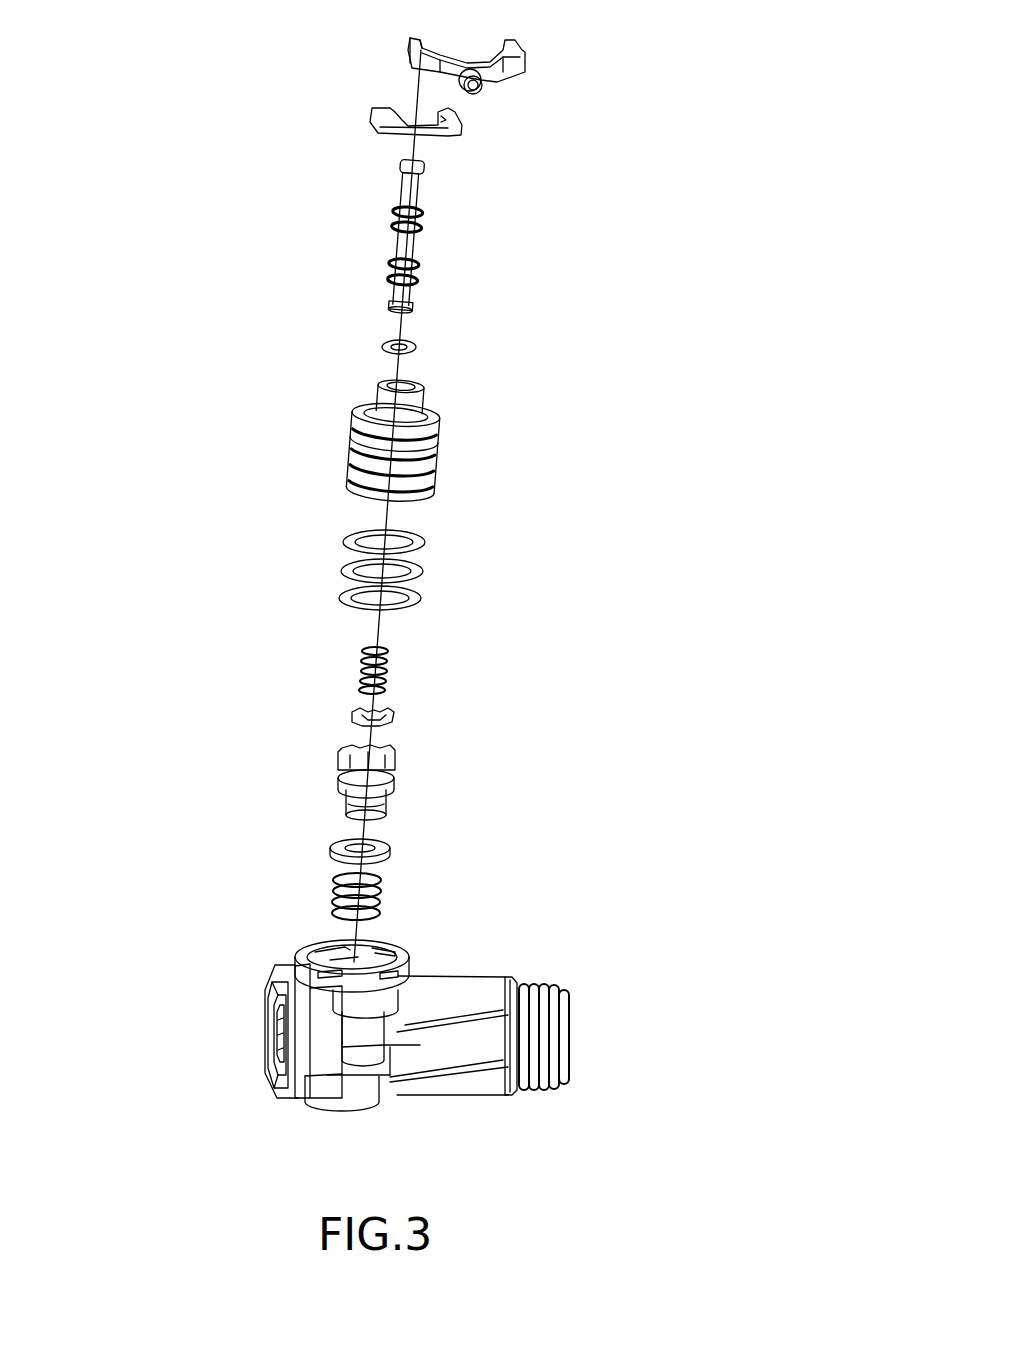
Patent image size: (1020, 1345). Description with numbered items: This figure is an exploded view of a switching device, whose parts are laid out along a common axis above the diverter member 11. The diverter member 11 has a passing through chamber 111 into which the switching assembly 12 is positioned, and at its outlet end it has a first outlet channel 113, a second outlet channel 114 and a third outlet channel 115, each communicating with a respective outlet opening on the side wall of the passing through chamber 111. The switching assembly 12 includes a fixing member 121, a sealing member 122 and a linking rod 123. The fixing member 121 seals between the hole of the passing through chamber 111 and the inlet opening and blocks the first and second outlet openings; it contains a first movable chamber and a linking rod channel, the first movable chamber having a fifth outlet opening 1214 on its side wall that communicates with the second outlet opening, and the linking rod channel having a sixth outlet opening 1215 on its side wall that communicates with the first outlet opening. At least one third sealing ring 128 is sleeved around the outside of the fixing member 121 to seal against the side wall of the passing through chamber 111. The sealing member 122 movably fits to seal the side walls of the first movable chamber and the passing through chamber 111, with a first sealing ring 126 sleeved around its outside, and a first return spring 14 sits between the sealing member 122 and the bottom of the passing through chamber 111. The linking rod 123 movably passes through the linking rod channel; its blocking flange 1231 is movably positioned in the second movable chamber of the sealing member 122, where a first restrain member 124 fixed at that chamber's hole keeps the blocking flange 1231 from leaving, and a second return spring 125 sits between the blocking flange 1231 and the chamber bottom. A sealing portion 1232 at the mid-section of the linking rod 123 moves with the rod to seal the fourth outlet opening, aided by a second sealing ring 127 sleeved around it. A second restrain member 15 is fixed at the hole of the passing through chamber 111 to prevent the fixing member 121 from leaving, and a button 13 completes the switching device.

The diverter member 11 is at (435, 1016).
The passing through chamber 111 is at (300, 946).
The first outlet channel 113 is at (280, 982).
The second outlet channel 114 is at (273, 1020).
The third outlet channel 115 is at (272, 1067).
The switching assembly 12 is at (668, 247).
The fixing member 121 is at (392, 440).
The fifth outlet opening 1214 is at (356, 470).
The sixth outlet opening 1215 is at (356, 427).
The sealing member 122 is at (397, 782).
The linking rod 123 is at (392, 242).
The blocking flange 1231 is at (392, 303).
The sealing portion 1232 is at (394, 260).
The first restrain member 124 is at (397, 718).
The second return spring 125 is at (397, 670).
The first sealing ring 126 is at (393, 855).
The second sealing ring 127 is at (420, 350).
The third sealing ring 128 is at (428, 577).
The button 13 is at (528, 62).
The first return spring 14 is at (392, 908).
The second restrain member 15 is at (470, 128).